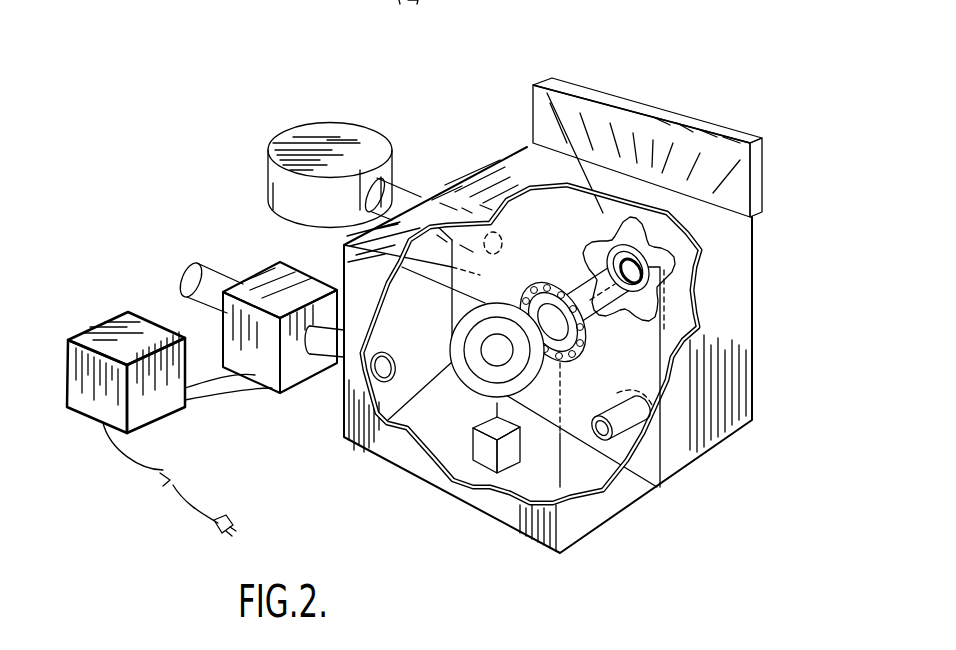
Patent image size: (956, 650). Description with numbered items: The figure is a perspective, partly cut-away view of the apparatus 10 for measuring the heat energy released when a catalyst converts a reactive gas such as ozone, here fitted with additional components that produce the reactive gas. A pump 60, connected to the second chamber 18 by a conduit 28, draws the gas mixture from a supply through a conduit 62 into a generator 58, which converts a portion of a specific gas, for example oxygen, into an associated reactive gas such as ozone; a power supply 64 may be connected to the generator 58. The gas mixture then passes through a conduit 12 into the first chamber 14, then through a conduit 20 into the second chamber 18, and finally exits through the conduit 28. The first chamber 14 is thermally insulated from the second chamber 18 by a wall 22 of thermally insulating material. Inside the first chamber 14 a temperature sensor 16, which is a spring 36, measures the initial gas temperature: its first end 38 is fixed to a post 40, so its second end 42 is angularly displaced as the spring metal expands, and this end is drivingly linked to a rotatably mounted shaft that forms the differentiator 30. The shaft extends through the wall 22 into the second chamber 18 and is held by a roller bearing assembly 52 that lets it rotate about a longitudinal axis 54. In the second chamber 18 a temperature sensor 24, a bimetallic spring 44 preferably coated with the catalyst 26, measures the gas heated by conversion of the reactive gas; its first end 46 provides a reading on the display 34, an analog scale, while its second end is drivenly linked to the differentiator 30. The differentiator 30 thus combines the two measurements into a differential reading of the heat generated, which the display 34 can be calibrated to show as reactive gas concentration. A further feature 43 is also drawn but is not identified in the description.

The apparatus 10 is at (700, 97).
The conduit 12 is at (333, 363).
The first chamber 14 is at (590, 488).
The temperature sensor 16 is at (493, 400).
The second chamber 18 is at (541, 197).
The conduit 20 is at (645, 467).
The wall 22 is at (392, 268).
The temperature sensor 24 is at (547, 93).
The catalyst 26 is at (665, 280).
The conduit 28 is at (403, 190).
The differentiator 30 is at (685, 337).
The display 34 is at (597, 113).
The spring 36 is at (456, 333).
The first end 38 is at (440, 488).
The post 40 is at (507, 470).
The second end 42 is at (450, 327).
The bore 43 is at (503, 246).
The spring 44 is at (685, 217).
The first end 46 is at (630, 150).
The roller bearing assembly 52 is at (588, 343).
The longitudinal axis 54 is at (600, 306).
The generator 58 is at (258, 272).
The pump 60 is at (297, 128).
The conduit 62 is at (183, 283).
The power supply 64 is at (77, 410).